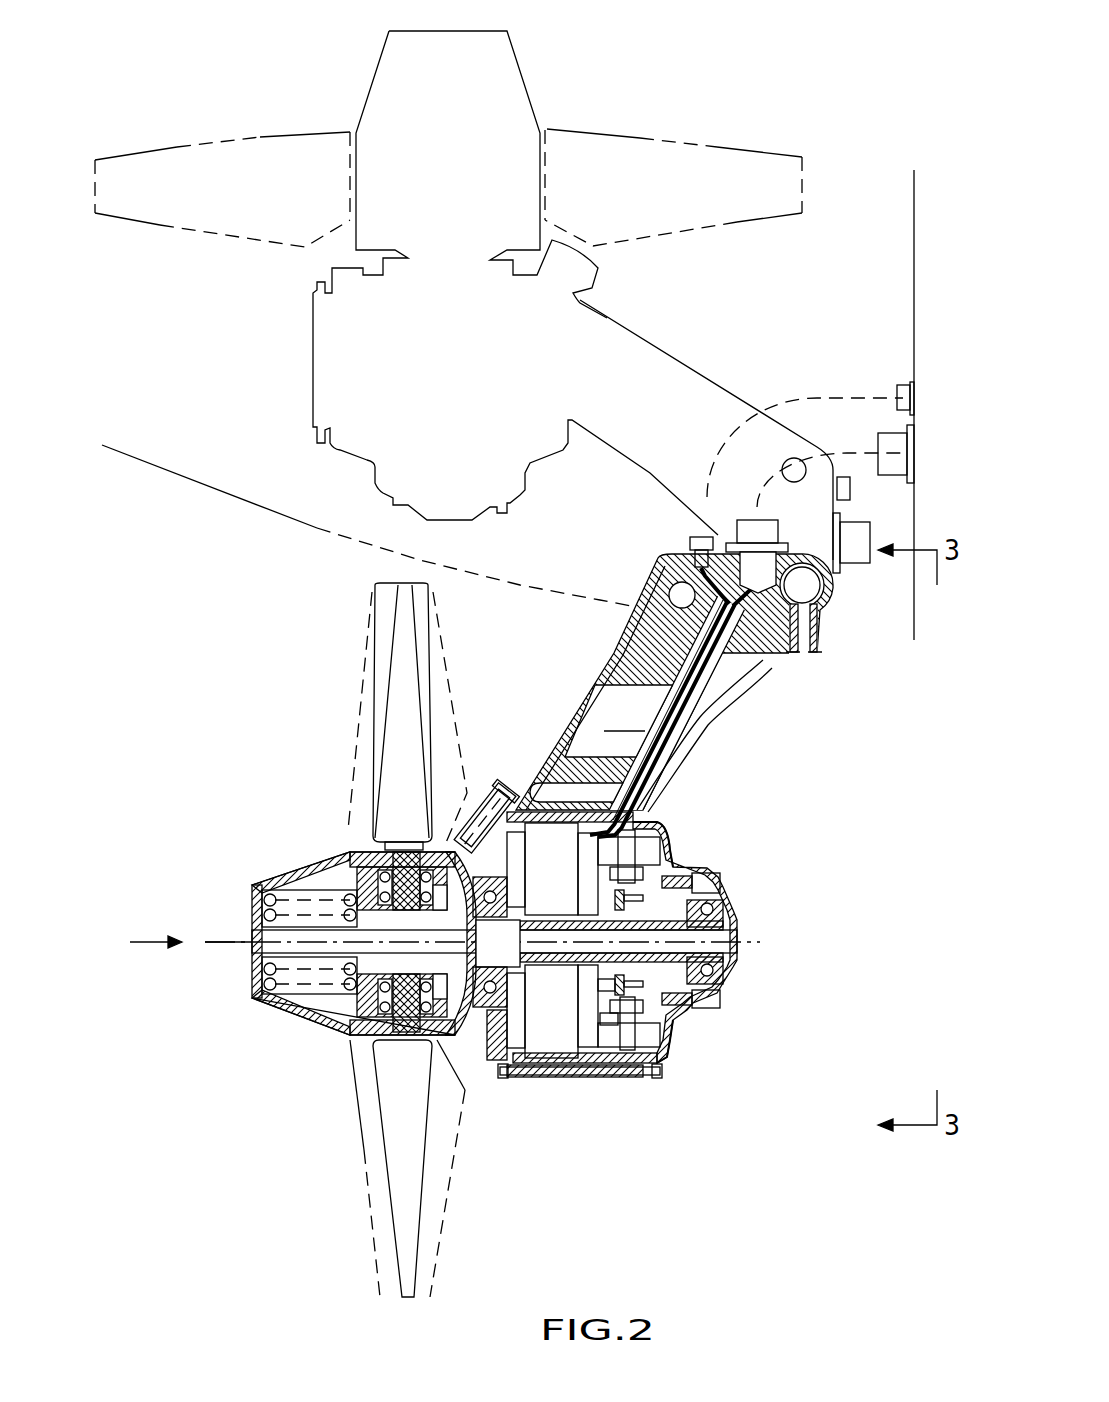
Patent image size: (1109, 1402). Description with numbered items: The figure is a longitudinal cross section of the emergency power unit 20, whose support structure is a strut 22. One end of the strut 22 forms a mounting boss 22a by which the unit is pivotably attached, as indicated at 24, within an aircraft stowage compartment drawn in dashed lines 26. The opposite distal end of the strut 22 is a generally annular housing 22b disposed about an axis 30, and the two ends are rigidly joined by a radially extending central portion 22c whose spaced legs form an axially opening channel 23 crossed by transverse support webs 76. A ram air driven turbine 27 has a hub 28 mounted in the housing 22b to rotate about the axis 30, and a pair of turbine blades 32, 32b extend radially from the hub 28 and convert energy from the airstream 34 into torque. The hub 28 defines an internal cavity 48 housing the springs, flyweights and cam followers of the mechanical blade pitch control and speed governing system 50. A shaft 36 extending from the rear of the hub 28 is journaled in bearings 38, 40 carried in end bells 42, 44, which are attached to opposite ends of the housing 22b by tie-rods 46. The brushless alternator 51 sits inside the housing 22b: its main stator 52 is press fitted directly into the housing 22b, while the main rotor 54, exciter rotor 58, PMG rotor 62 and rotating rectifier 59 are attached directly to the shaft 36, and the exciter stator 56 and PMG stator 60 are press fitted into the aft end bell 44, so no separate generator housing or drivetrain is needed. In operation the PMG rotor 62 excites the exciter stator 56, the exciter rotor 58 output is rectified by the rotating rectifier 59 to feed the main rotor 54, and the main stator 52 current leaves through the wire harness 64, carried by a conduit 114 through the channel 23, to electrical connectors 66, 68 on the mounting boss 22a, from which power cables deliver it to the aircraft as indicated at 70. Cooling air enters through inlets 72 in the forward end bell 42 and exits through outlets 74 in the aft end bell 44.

The emergency power unit 20 is at (308, 706).
The strut 22 is at (712, 695).
The mounting boss 22a is at (824, 585).
The housing 22b is at (557, 1080).
The central portion 22c is at (617, 646).
The axially opening channel 23 is at (619, 721).
The pivotable attachment 24 is at (820, 648).
The stowage compartment 26 is at (252, 505).
The ram air driven turbine 27 is at (300, 1020).
The hub 28 is at (340, 1040).
The axis 30 is at (330, 946).
The turbine blades 32 is at (370, 630).
The propeller blade 32b is at (377, 1280).
The airstream 34 is at (165, 913).
The shaft 36 is at (727, 890).
The bearing 38 is at (520, 807).
The bearing 40 is at (733, 928).
The forward end bell 42 is at (510, 1080).
The aft end bell 44 is at (717, 872).
The tie-rods 46 is at (657, 1077).
The internal cavity 48 is at (300, 880).
The blade pitch control and speed governing system 50 is at (367, 845).
The brushless alternator 51 is at (535, 870).
The main stator 52 is at (562, 828).
The main rotor 54 is at (535, 1010).
The exciter stator 56 is at (612, 1083).
The exciter rotor 58 is at (585, 1040).
The rotating rectifier 59 is at (643, 983).
The PMG stator 60 is at (723, 1005).
The PMG rotor 62 is at (737, 977).
The wire harness 64 is at (650, 783).
The electrical connector 66 is at (757, 514).
The electrical connector 68 is at (690, 537).
The aircraft power transfer 70 is at (818, 380).
The inlets 72 is at (490, 1057).
The outlets 74 is at (685, 848).
The transverse support webs 76 is at (720, 697).
The conduit 114 is at (700, 735).